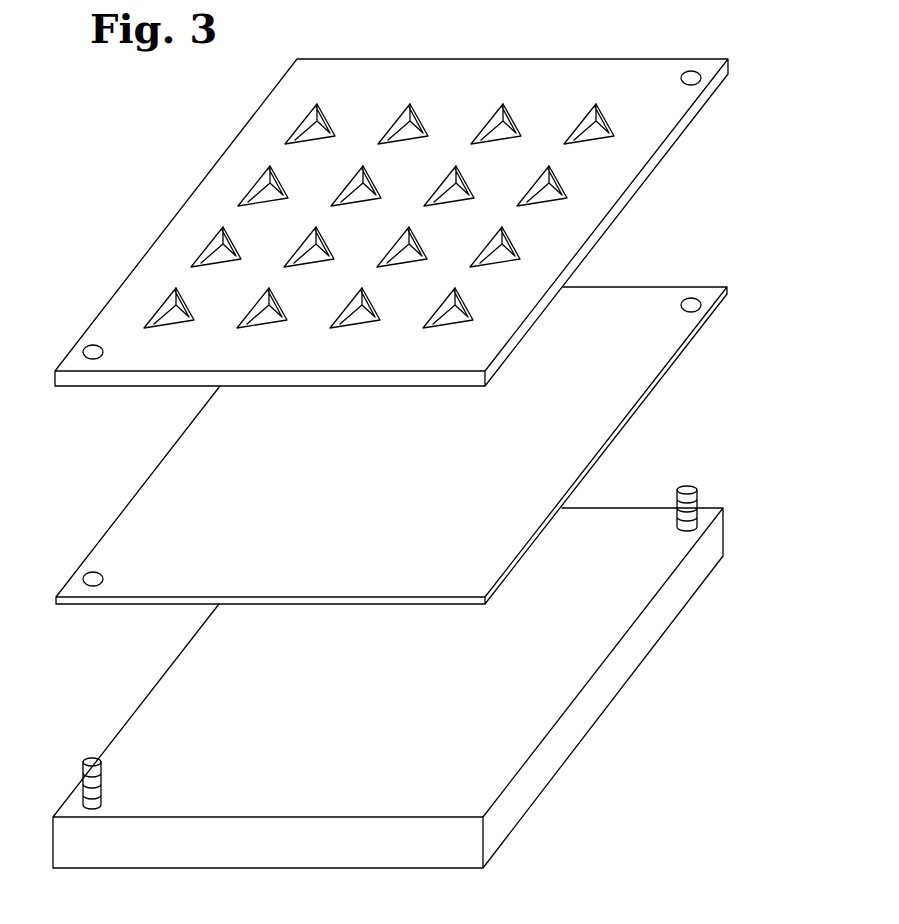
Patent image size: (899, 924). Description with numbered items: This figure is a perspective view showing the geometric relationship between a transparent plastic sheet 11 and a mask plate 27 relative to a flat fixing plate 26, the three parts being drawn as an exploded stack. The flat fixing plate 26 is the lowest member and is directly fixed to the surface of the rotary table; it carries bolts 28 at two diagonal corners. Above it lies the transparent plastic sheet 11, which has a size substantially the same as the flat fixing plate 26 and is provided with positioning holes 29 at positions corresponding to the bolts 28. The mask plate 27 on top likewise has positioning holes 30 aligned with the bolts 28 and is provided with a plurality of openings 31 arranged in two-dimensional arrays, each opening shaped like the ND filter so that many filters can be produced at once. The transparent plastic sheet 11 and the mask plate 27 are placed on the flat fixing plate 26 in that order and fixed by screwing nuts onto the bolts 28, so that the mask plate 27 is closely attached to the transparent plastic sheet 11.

The transparent plastic sheet 11 is at (635, 377).
The flat fixing plate 26 is at (580, 653).
The mask plate 27 is at (640, 151).
The bolts 28 is at (92, 760).
The positioning holes 29 is at (90, 578).
The positioning holes 30 is at (90, 345).
The openings 31 is at (173, 310).